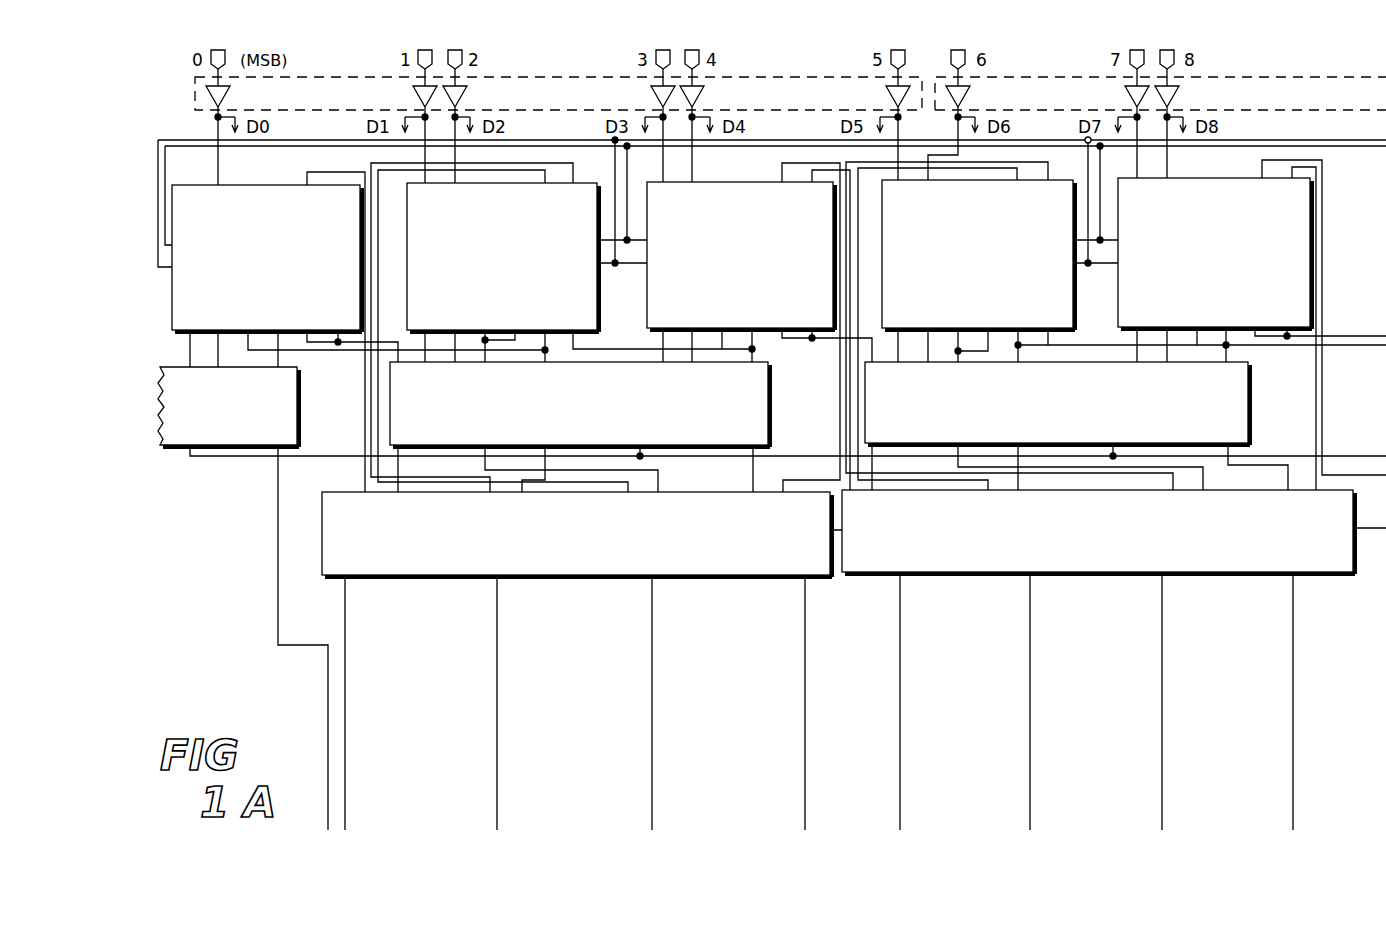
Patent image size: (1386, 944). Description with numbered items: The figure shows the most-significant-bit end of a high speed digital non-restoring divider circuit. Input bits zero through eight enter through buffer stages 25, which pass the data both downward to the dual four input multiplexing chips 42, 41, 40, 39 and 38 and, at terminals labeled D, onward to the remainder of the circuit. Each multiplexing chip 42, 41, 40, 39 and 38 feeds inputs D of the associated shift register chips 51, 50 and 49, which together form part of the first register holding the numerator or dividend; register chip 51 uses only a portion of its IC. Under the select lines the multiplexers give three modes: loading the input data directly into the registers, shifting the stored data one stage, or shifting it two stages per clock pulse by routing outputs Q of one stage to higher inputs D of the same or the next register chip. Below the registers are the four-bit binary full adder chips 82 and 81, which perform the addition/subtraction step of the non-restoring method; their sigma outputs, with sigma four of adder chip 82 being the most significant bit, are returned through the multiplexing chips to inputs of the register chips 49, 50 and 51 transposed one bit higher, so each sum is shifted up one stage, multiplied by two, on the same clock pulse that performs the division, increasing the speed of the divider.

The buffer stages 25 is at (1271, 62).
The dual four input multiplexing chip 42 is at (298, 183).
The dual four input multiplexing chip 41 is at (603, 326).
The dual four input multiplexing chip 40 is at (745, 181).
The dual four input multiplexing chip 39 is at (996, 255).
The dual four input multiplexing chip 38 is at (1118, 328).
The shift register chip 51 is at (297, 420).
The shift register chip 50 is at (768, 420).
The shift register chip 49 is at (1248, 406).
The 4-bit binary full adder chip 82 is at (822, 578).
The 4-bit binary full adder chip 81 is at (1340, 578).